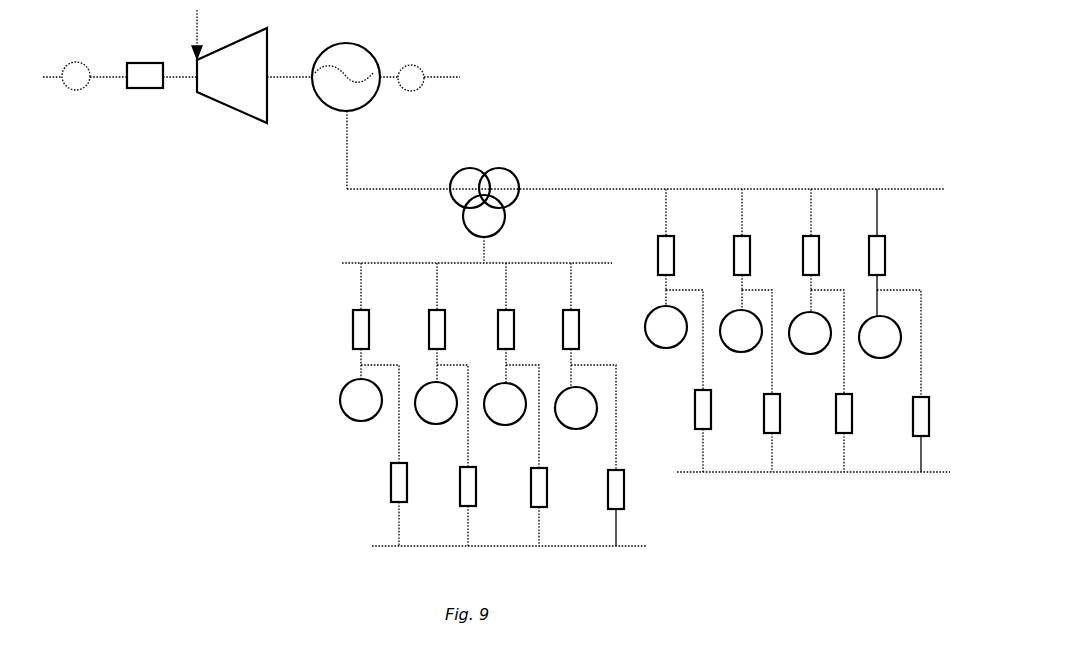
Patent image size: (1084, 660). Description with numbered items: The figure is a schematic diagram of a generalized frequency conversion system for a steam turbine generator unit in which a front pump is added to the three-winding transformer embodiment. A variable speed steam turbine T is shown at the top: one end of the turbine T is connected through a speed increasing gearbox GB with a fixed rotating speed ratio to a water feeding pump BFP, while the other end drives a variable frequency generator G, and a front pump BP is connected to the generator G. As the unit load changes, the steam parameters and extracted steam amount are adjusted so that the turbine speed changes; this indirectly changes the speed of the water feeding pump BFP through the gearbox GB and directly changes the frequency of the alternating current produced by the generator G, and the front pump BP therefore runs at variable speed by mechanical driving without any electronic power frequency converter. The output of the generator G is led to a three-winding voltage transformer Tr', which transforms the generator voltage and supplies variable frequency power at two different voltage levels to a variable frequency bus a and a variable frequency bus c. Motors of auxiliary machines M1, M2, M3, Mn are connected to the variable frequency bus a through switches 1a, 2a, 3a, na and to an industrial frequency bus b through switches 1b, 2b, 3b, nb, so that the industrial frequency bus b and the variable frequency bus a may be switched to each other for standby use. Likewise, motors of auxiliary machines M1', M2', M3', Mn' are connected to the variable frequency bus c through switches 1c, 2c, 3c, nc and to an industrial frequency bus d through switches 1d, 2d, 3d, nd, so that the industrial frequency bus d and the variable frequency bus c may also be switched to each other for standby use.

The water feeding pump BFP is at (76, 76).
The speed increasing gearbox GB is at (145, 75).
The variable speed steam turbine T is at (229, 66).
The variable frequency generator G is at (346, 77).
The front pump BP is at (411, 78).
The three-winding voltage transformer Tr' is at (484, 201).
The variable frequency bus a is at (646, 179).
The industrial frequency bus b is at (813, 486).
The variable frequency bus c is at (477, 254).
The industrial frequency bus d is at (509, 559).
The switch between auxiliary machine and variable frequency bus 1a is at (681, 239).
The switch between auxiliary machine and variable frequency bus 2a is at (757, 239).
The switch between auxiliary machine and variable frequency bus 3a is at (826, 239).
The switch between auxiliary machine and variable frequency bus na is at (892, 239).
The switch between auxiliary machine and industrial frequency bus 1b is at (704, 381).
The switch between auxiliary machine and industrial frequency bus 2b is at (776, 381).
The switch between auxiliary machine and industrial frequency bus 3b is at (847, 381).
The switch between auxiliary machine and industrial frequency bus nb is at (918, 381).
The switch between auxiliary machine and variable frequency bus 1c is at (376, 314).
The switch between auxiliary machine and variable frequency bus 2c is at (452, 314).
The switch between auxiliary machine and variable frequency bus 3c is at (521, 314).
The switch between auxiliary machine and variable frequency bus nc is at (586, 314).
The switch between auxiliary machine and industrial frequency bus 1d is at (399, 455).
The switch between auxiliary machine and industrial frequency bus 2d is at (472, 455).
The switch between auxiliary machine and industrial frequency bus 3d is at (542, 455).
The switch between auxiliary machine and industrial frequency bus nd is at (613, 455).
The motor of auxiliary machine M1 is at (666, 319).
The motor of auxiliary machine M2 is at (741, 321).
The motor of auxiliary machine M3 is at (810, 322).
The motor of auxiliary machine Mn is at (880, 324).
The motor of auxiliary machine M1' is at (361, 393).
The motor of auxiliary machine M2' is at (436, 394).
The motor of auxiliary machine M3' is at (505, 395).
The motor of auxiliary machine Mn' is at (576, 397).